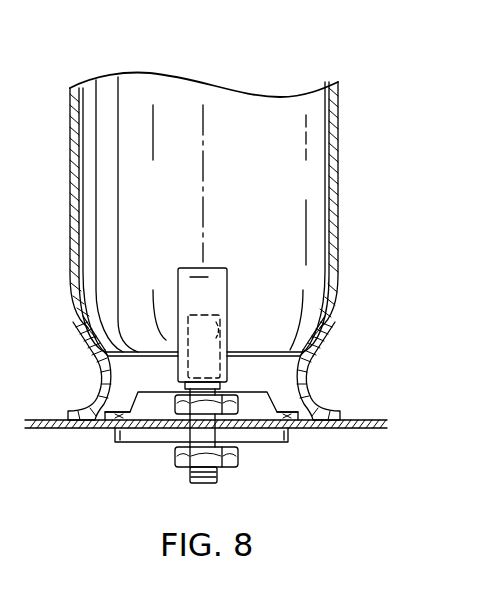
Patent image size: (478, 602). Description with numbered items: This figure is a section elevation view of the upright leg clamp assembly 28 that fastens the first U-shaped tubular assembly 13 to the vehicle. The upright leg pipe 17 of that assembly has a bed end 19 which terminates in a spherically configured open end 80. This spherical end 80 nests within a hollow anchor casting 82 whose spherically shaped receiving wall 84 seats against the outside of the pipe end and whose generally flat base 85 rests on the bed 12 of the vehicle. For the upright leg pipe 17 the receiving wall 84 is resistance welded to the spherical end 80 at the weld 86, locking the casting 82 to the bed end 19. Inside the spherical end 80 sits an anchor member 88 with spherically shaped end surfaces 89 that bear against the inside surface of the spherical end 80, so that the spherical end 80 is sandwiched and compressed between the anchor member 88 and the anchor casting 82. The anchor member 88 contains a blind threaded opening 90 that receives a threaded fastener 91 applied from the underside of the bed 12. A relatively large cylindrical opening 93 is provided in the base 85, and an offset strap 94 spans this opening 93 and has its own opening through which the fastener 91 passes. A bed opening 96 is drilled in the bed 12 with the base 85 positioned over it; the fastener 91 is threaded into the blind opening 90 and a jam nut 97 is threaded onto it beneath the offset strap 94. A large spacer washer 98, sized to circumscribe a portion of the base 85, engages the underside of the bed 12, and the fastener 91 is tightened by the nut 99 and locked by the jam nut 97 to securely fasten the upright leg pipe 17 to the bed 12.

The bed 12 is at (44, 429).
The first U-shaped tubular assembly 13 is at (300, 57).
The upright leg pipe 17 is at (340, 92).
The bed end 19 is at (338, 166).
The upright leg clamp assembly 28 is at (338, 352).
The spherically configured open end 80 is at (334, 305).
The hollow anchor casting 82 is at (102, 378).
The spherically shaped receiving wall 84 is at (313, 365).
The base 85 is at (313, 411).
The weld 86 is at (80, 338).
The anchor member 88 is at (226, 268).
The spherically shaped end surfaces 89 is at (205, 297).
The blind threaded opening 90 is at (221, 319).
The threaded fastener 91 is at (222, 473).
The cylindrical opening 93 is at (290, 436).
The offset strap 94 is at (243, 394).
The bed opening 96 is at (180, 450).
The jam nut 97 is at (176, 404).
The spacer washer 98 is at (117, 441).
The nut 99 is at (200, 460).